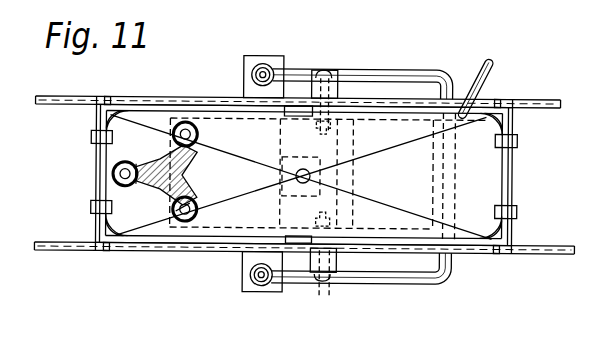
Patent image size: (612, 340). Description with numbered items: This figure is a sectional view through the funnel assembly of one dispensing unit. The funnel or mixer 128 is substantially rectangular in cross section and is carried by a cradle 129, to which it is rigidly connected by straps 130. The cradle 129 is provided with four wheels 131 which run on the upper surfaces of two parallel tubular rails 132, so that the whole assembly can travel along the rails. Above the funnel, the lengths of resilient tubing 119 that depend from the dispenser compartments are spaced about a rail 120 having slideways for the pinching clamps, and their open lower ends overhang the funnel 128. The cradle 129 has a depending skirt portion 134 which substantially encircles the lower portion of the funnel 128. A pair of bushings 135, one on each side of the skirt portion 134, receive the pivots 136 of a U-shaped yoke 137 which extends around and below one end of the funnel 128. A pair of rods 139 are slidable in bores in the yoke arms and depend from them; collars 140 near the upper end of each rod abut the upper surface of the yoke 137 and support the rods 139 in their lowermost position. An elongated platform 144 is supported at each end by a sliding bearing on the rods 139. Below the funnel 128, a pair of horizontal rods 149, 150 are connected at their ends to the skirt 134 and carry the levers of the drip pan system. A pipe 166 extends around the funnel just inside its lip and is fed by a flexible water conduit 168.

The resilient tubing 119 is at (113, 175).
The rail 120 is at (163, 178).
The funnel or mixer 128 is at (157, 163).
The cradle 129 is at (517, 172).
The straps 130 is at (91, 138).
The wheels 131 is at (108, 100).
The tubular rails 132 is at (548, 110).
The skirt portion 134 is at (190, 232).
The bushings 135 is at (313, 257).
The pivots 136 is at (328, 72).
The U-shaped yoke 137 is at (367, 70).
The rods 139 is at (266, 66).
The collars 140 is at (250, 58).
The platform 144 is at (243, 78).
The rod 149 is at (352, 171).
The rod 150 is at (340, 214).
The pipe 166 is at (199, 119).
The flexible water conduit 168 is at (485, 60).